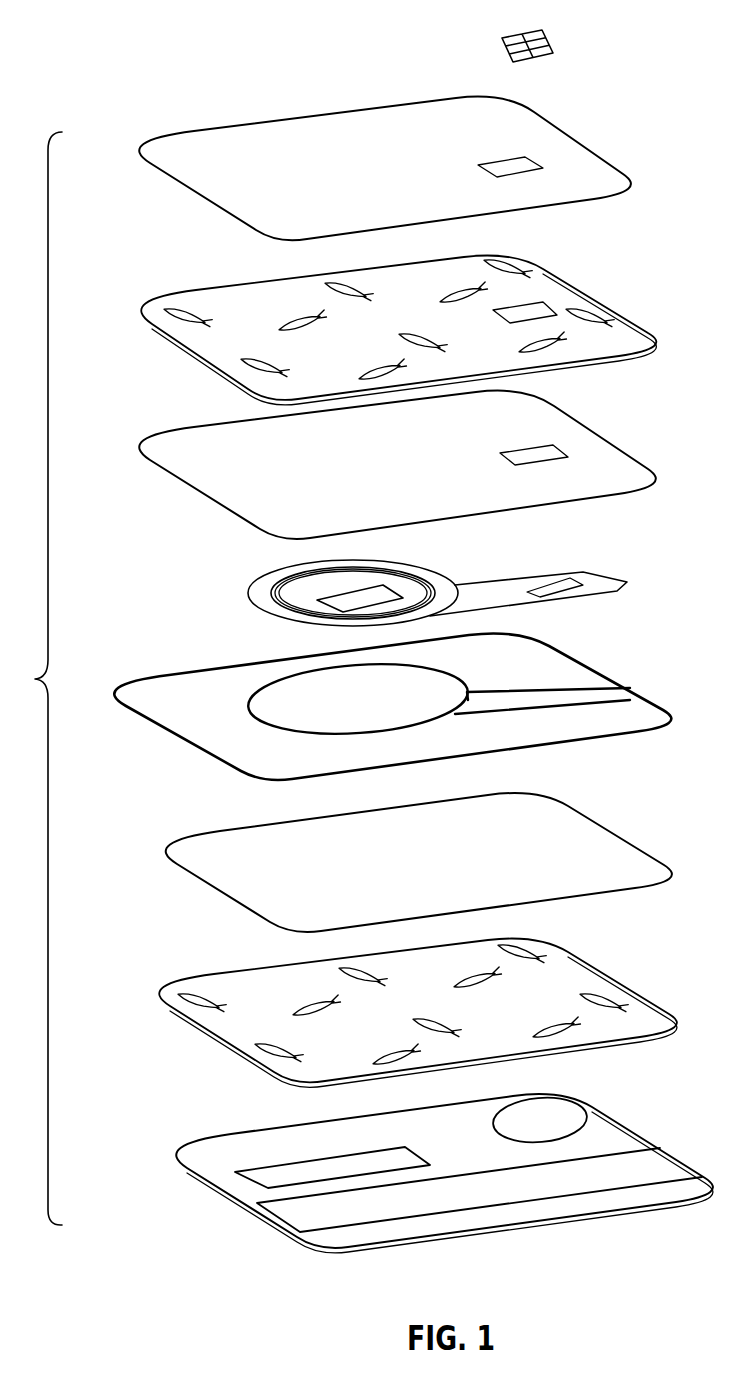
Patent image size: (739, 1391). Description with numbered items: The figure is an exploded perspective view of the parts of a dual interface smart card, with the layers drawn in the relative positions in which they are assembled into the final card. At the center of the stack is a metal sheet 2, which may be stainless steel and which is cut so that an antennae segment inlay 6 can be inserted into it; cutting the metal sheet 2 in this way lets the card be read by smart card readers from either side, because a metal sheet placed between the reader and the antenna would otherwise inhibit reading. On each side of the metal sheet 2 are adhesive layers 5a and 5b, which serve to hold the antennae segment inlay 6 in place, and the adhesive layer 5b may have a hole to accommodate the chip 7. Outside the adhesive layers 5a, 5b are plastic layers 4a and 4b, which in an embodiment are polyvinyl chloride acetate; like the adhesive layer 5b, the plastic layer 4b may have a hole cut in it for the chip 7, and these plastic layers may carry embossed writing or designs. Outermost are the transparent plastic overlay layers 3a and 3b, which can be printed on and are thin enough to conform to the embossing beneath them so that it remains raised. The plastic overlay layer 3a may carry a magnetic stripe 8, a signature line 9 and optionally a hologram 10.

The metal sheet 2 is at (640, 718).
The plastic overlay layer 3a is at (635, 1142).
The plastic overlay layer 3b is at (607, 155).
The plastic layer 4a is at (640, 1012).
The plastic layer 4b is at (617, 310).
The adhesive layer 5a is at (630, 868).
The adhesive layer 5b is at (617, 470).
The antennae segment inlay 6 is at (588, 578).
The chip 7 is at (556, 43).
The magnetic stripe 8 is at (280, 1213).
The signature line 9 is at (342, 1167).
The hologram 10 is at (552, 1117).